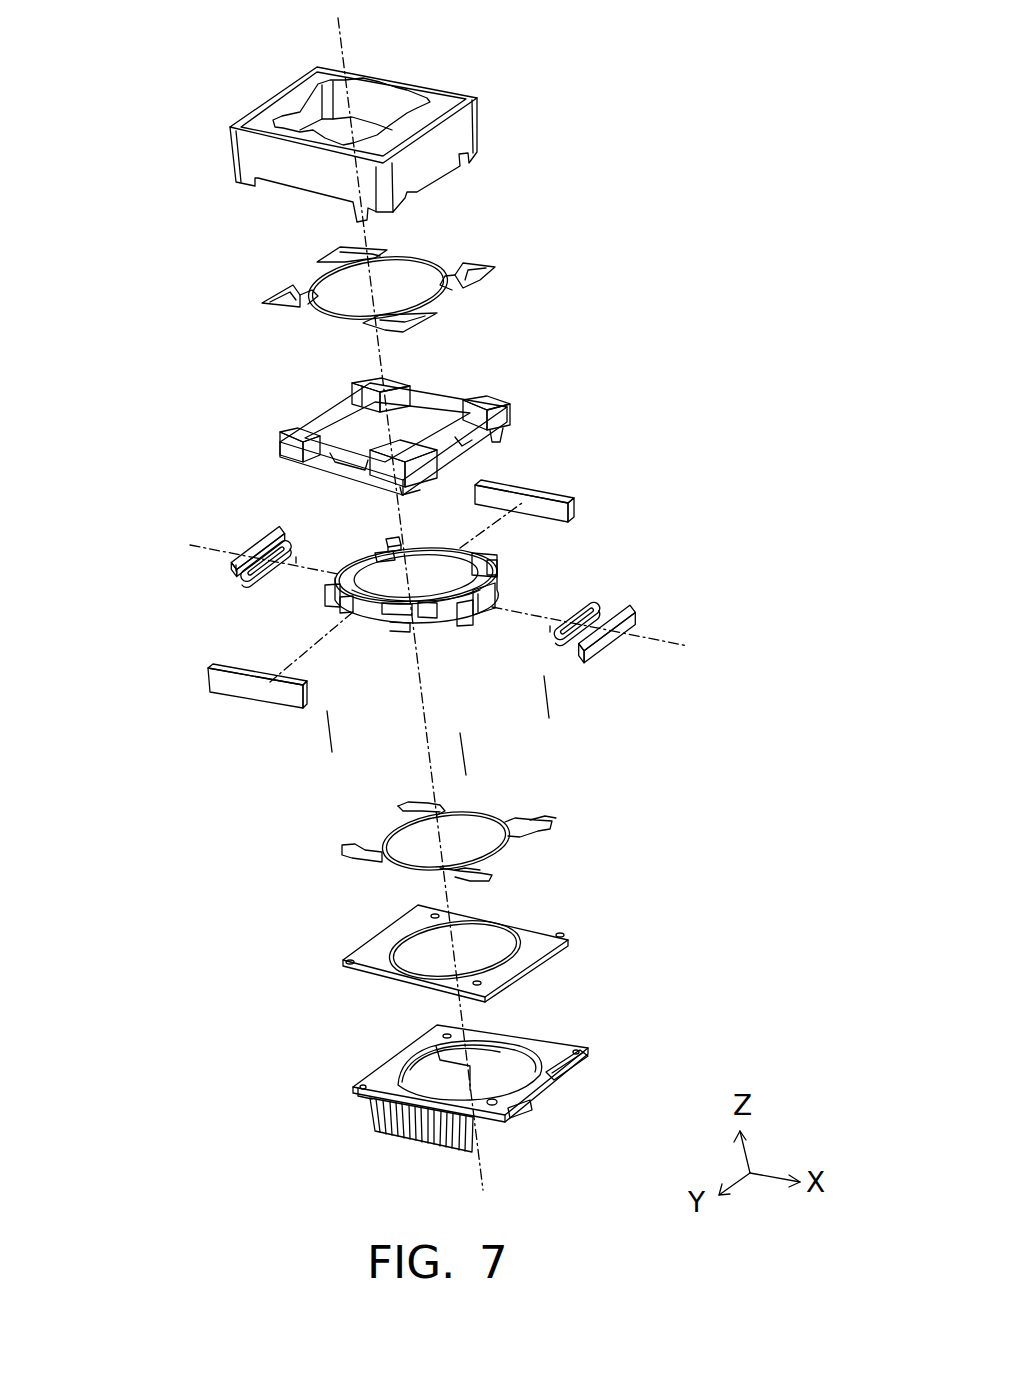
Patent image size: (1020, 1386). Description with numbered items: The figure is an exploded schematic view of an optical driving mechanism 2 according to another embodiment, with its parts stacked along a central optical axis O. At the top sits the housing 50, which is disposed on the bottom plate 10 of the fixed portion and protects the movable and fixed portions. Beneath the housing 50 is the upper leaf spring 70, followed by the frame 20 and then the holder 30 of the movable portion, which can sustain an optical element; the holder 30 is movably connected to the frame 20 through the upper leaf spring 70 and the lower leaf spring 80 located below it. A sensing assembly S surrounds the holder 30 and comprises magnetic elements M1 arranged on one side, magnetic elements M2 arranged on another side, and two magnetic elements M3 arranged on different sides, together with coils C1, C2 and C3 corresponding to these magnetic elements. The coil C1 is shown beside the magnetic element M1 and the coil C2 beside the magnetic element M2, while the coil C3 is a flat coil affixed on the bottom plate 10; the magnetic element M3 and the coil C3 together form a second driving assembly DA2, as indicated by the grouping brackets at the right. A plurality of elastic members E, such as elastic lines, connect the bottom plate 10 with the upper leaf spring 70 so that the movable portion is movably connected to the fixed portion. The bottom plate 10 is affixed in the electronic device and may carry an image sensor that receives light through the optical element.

The optical driving mechanism 2 is at (58, 34).
The optical axis O is at (402, 595).
The housing 50 is at (481, 124).
The upper leaf spring 70 is at (489, 272).
The frame 20 is at (509, 409).
The holder 30 is at (500, 567).
The magnetic element M1 is at (605, 648).
The coil C1 is at (553, 638).
The magnetic element M2 is at (260, 540).
The coil C2 is at (264, 580).
The magnetic element M3 is at (558, 502).
The coil C3 is at (565, 933).
The elastic member E is at (318, 735).
The lower leaf spring 80 is at (535, 823).
The bottom plate 10 is at (588, 1053).
The sensing assembly S is at (781, 22).
The second driving assembly DA2 is at (781, 330).